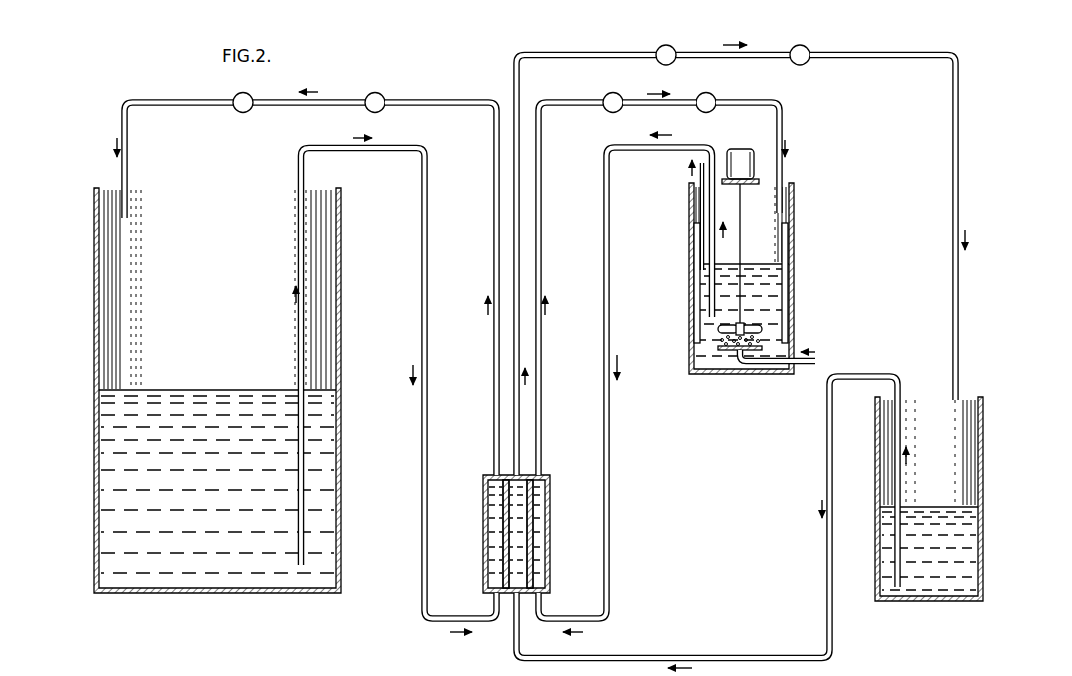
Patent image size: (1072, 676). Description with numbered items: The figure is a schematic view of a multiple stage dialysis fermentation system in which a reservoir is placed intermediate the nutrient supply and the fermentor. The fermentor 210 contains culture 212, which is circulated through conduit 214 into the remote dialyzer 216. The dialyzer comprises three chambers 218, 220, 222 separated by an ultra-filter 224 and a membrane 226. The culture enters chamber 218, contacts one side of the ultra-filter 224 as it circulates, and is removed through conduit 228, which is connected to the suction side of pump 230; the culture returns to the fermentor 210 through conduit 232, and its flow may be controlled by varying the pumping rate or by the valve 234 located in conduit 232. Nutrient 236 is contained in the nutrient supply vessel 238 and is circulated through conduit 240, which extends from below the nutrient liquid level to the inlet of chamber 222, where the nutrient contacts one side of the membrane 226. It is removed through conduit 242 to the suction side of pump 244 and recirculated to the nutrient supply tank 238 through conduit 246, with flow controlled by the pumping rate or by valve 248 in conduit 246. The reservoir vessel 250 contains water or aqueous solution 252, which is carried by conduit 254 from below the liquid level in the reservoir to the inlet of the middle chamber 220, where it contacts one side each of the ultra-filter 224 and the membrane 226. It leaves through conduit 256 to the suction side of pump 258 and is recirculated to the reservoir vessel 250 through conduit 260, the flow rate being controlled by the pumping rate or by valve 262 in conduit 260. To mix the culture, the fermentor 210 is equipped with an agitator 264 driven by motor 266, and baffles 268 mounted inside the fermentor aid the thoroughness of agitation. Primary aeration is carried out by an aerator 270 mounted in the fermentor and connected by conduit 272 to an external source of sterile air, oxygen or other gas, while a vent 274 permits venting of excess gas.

The fermentor 210 is at (802, 256).
The culture 212 is at (770, 318).
The conduit 214 is at (604, 265).
The remote dialyzer 216 is at (482, 531).
The chamber 218 is at (540, 563).
The chamber 220 is at (517, 540).
The chamber 222 is at (495, 563).
The ultra-filter 224 is at (531, 505).
The membrane 226 is at (503, 505).
The conduit 228 is at (541, 367).
The pump 230 is at (613, 92).
The conduit 232 is at (783, 107).
The valve 234 is at (706, 92).
The nutrient 236 is at (107, 497).
The nutrient supply vessel 238 is at (90, 351).
The conduit 240 is at (422, 295).
The conduit 242 is at (494, 383).
The pump 244 is at (375, 92).
The conduit 246 is at (172, 99).
The valve 248 is at (244, 113).
The reservoir vessel 250 is at (984, 448).
The water or aqueous solution 252 is at (965, 532).
The conduit 254 is at (828, 568).
The conduit 256 is at (549, 52).
The pump 258 is at (666, 44).
The conduit 260 is at (960, 160).
The valve 262 is at (800, 44).
The agitator 264 is at (722, 330).
The motor 266 is at (738, 151).
The baffles 268 is at (694, 278).
The aerator 270 is at (731, 355).
The conduit 272 is at (818, 361).
The vent 274 is at (699, 182).